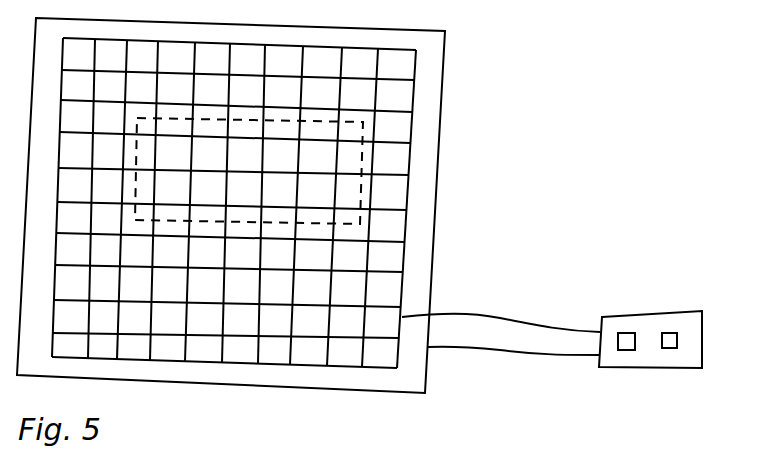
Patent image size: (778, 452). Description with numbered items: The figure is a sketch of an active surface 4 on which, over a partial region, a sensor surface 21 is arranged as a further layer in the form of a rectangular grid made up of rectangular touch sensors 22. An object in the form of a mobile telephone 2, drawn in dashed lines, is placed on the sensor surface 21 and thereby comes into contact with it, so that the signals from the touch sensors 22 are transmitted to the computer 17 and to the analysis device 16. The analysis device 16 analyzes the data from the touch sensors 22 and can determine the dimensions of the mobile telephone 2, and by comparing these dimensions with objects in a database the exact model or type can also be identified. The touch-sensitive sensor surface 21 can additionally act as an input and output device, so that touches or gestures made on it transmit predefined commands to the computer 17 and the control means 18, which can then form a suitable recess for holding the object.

The mobile telephone 2 is at (360, 122).
The active surface 4 is at (430, 145).
The sensor surface 21 is at (407, 223).
The touch sensors 22 is at (380, 262).
The analysis device 16 is at (626, 331).
The control means 18 is at (668, 332).
The computer 17 is at (702, 322).